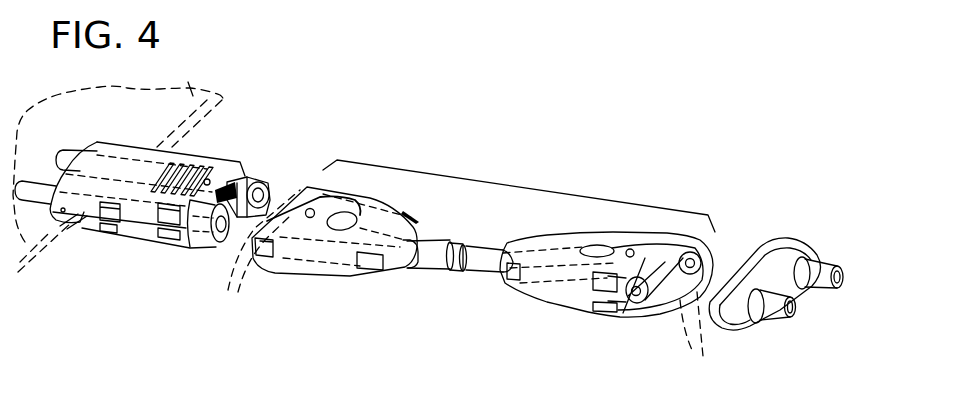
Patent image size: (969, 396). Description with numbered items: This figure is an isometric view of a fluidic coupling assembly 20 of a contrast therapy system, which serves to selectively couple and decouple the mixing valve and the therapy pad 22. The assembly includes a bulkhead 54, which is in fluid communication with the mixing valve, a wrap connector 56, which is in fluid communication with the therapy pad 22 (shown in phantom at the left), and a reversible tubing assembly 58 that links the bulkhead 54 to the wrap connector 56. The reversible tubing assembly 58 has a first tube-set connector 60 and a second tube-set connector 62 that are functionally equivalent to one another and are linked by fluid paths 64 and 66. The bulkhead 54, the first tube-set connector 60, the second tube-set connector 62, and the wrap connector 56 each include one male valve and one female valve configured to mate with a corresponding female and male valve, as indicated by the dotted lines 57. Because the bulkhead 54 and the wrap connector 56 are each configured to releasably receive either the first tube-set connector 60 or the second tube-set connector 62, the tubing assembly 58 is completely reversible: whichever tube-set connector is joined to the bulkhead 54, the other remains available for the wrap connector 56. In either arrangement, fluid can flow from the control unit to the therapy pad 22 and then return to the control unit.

The fluidic coupling assembly 20 is at (349, 118).
The therapy pad 22 is at (198, 72).
The bulkhead 54 is at (764, 226).
The wrap connector 56 is at (200, 157).
The dotted lines 57 is at (468, 287).
The reversible tubing assembly 58 is at (501, 183).
The first tube-set connector 60 is at (367, 197).
The second tube-set connector 62 is at (610, 237).
The fluid path 64 is at (443, 240).
The fluid path 66 is at (430, 269).